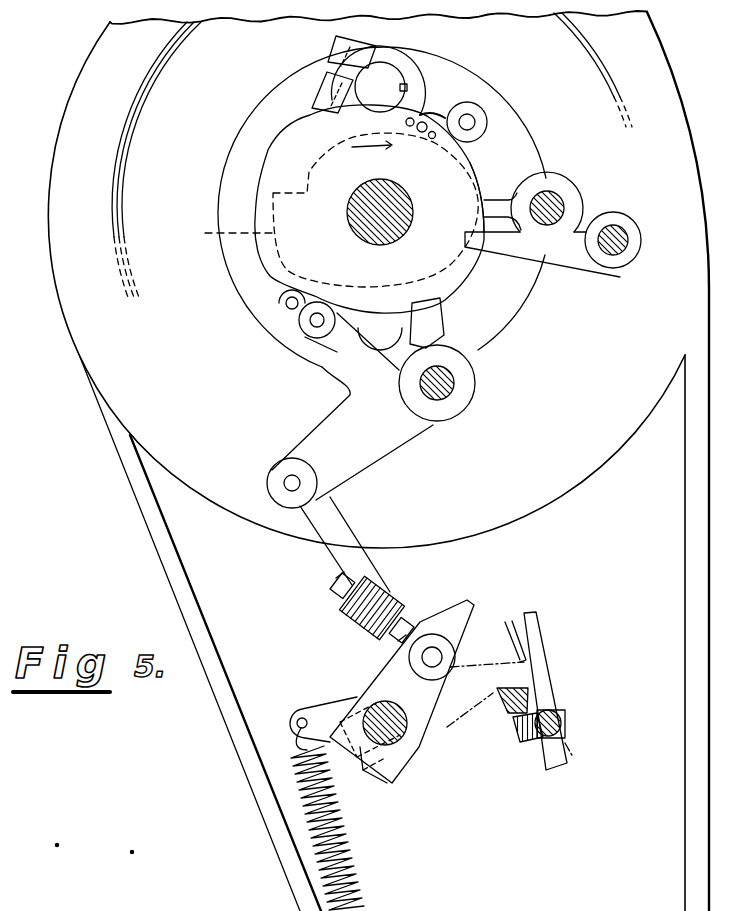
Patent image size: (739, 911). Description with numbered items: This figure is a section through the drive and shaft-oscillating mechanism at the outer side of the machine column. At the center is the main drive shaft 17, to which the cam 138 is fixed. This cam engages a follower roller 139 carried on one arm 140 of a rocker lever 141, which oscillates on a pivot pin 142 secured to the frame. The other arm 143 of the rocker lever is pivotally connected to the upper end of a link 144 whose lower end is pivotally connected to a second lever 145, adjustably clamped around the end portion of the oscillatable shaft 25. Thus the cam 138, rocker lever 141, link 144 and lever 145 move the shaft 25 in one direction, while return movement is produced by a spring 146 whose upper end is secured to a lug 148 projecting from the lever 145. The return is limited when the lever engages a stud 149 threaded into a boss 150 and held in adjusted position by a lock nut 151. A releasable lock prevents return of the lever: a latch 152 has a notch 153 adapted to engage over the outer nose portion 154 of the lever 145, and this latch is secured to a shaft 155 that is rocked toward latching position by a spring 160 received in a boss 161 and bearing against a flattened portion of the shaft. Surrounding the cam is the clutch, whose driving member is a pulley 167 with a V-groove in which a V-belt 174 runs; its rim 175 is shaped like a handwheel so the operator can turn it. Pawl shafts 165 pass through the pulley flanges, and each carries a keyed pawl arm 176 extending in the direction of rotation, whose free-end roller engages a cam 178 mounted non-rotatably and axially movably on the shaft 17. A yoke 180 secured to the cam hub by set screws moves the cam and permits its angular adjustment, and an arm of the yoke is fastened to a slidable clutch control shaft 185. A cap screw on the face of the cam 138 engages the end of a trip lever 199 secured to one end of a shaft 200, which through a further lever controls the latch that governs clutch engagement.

The main drive shaft 17 is at (407, 203).
The shaft 25 is at (412, 760).
The cam 138 is at (265, 265).
The follower roller 139 is at (306, 336).
The arm 140 is at (337, 353).
The rocker lever 141 is at (352, 412).
The pivot pin 142 is at (445, 386).
The arm 143 is at (345, 468).
The link 144 is at (341, 548).
The lever 145 is at (384, 671).
The spring 146 is at (362, 899).
The lug 148 is at (328, 710).
The stud 149 is at (330, 588).
The boss 150 is at (389, 594).
The lock nut 151 is at (340, 598).
The latch 152 is at (543, 689).
The notch 153 is at (524, 661).
The nose portion 154 is at (469, 606).
The shaft 155 is at (561, 723).
The spring 160 is at (521, 731).
The boss 161 is at (503, 706).
The trunnion shaft 165 is at (386, 73).
The driving clutch member pulley 167 is at (352, 207).
The V-belt 174 is at (236, 724).
The rim 175 is at (60, 171).
The pawl arm 176 is at (447, 92).
The cam 178 is at (322, 210).
The yoke 180 is at (500, 174).
The clutch control shaft 185 is at (557, 196).
The trip lever 199 is at (560, 256).
The shaft 200 is at (615, 241).